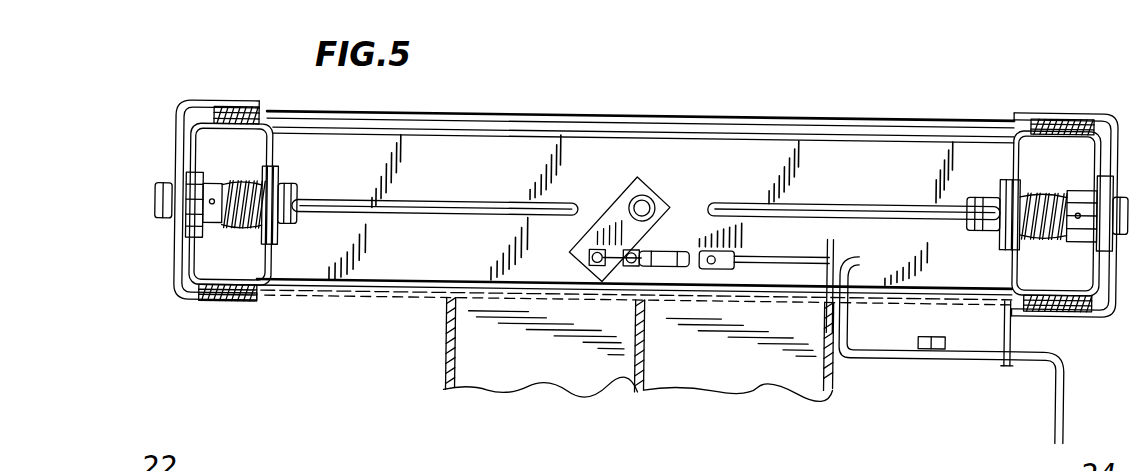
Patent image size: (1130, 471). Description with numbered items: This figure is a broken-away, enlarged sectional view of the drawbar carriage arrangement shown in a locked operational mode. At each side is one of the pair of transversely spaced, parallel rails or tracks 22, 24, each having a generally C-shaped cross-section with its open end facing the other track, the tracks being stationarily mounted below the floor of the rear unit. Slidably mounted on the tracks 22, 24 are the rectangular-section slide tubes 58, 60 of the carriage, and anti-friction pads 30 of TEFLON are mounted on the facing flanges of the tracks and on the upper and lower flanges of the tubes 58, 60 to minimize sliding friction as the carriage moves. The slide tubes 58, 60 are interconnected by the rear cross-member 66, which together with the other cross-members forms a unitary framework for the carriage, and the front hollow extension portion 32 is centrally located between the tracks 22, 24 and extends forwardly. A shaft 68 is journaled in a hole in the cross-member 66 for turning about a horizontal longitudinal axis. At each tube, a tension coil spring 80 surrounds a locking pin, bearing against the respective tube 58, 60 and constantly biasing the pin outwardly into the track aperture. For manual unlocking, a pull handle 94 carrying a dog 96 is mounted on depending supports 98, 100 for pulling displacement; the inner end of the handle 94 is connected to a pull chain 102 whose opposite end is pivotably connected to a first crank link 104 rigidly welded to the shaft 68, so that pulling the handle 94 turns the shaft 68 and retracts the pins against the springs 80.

The rail or track 22 is at (184, 108).
The rail or track 24 is at (1111, 118).
The anti-friction pads 30 is at (238, 112).
The front hollow extension portion 32 is at (447, 356).
The slide tube 58 is at (276, 259).
The slide tube 60 is at (1013, 164).
The rear cross-member 66 is at (573, 138).
The shaft 68 is at (664, 197).
The tension coil spring 80 is at (238, 190).
The pull handle 94 is at (982, 362).
The dog 96 is at (955, 326).
The depending support 98 is at (1015, 334).
The depending support 100 is at (842, 253).
The pull chain 102 is at (744, 254).
The first crank link 104 is at (604, 214).